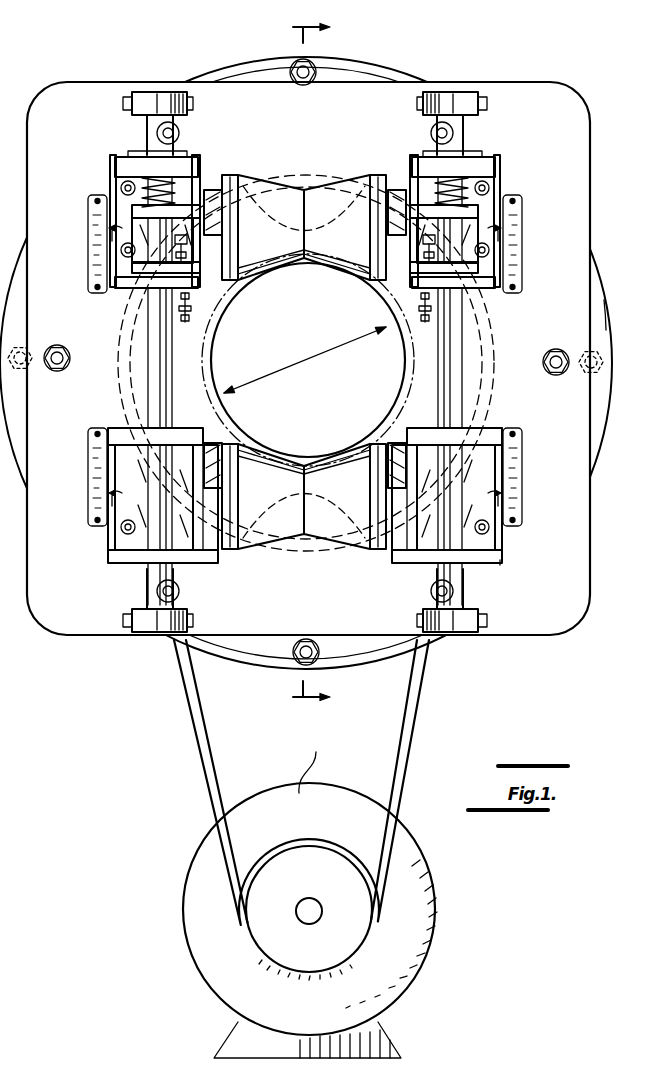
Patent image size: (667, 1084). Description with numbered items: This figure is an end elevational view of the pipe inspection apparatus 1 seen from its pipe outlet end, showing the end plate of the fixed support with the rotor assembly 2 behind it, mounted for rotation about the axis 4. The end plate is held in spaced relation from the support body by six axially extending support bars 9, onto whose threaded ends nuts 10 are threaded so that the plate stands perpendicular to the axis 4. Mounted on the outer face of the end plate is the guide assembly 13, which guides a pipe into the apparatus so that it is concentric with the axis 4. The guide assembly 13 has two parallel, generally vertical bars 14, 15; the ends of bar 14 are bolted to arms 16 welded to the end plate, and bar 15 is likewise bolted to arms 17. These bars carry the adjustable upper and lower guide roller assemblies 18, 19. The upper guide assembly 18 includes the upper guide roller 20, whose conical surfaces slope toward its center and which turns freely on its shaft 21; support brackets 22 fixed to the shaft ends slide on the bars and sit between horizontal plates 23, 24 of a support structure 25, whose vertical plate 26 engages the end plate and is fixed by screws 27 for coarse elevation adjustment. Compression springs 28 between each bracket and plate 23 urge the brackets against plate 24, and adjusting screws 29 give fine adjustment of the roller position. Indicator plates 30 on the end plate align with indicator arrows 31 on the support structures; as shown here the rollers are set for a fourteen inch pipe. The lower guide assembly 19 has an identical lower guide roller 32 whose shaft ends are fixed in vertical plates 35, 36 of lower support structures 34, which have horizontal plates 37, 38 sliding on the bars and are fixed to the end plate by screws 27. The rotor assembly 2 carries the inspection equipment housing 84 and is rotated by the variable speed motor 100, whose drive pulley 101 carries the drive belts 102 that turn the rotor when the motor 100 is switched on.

The inspection apparatus 1 is at (534, 84).
The rotor assembly 2 is at (299, 366).
The axis 4 is at (312, 352).
The support bars 9 is at (310, 80).
The nuts 10 is at (292, 77).
The guide assembly 13 is at (569, 274).
The bar 14 is at (160, 368).
The bar 15 is at (438, 392).
The arms 16 is at (160, 95).
The arms 17 is at (438, 98).
The upper guide assembly 18 is at (508, 160).
The lower guide assembly 19 is at (505, 566).
The upper guide roller 20 is at (262, 175).
The shaft 21 is at (364, 185).
The support brackets 22 is at (204, 270).
The horizontal plate portion 23 is at (123, 158).
The horizontal plate portion 24 is at (114, 287).
The support structure 25 is at (113, 180).
The vertical plate portion 26 is at (118, 188).
The screws 27 is at (490, 256).
The compression springs 28 is at (192, 160).
The adjusting screws 29 is at (186, 240).
The indicator plates 30 is at (88, 250).
The indicator arrows 31 is at (305, 369).
The lower guide roller 32 is at (244, 553).
The lower support structures 34 is at (115, 538).
The vertical plate 35 is at (392, 553).
The vertical plate 36 is at (216, 553).
The horizontal plate portion 37 is at (115, 428).
The horizontal plate portion 38 is at (118, 562).
The inspection equipment housing 84 is at (604, 305).
The variable speed motor 100 is at (416, 868).
The drive pulley 101 is at (323, 858).
The drive belts 102 is at (408, 737).